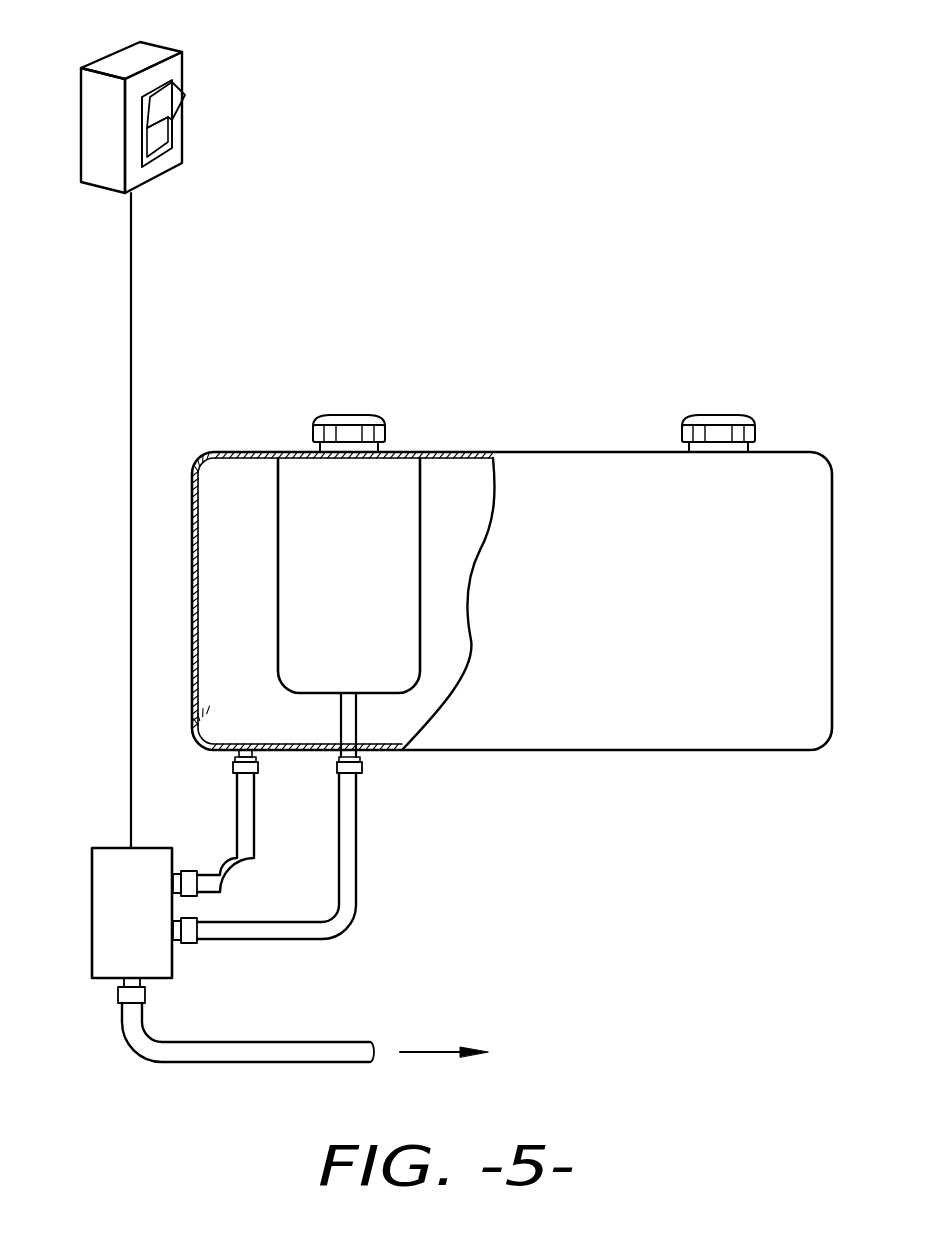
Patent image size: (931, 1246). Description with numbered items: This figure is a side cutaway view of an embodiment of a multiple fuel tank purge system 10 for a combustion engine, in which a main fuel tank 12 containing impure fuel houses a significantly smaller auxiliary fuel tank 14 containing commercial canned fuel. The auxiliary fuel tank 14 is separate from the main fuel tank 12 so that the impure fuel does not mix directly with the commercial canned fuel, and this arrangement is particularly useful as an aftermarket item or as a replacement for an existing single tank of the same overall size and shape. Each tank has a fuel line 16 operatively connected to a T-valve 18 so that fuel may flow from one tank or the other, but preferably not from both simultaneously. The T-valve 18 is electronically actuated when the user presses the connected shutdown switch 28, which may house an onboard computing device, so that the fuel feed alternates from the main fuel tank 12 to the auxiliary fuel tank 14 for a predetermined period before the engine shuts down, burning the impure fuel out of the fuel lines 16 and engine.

The multiple fuel tank purge system 10 is at (527, 936).
The main fuel tank 12 is at (582, 496).
The auxiliary fuel tank 14 is at (318, 510).
The fuel line 16 is at (258, 851).
The T-valve 18 is at (110, 888).
The shutdown switch 28 is at (185, 68).